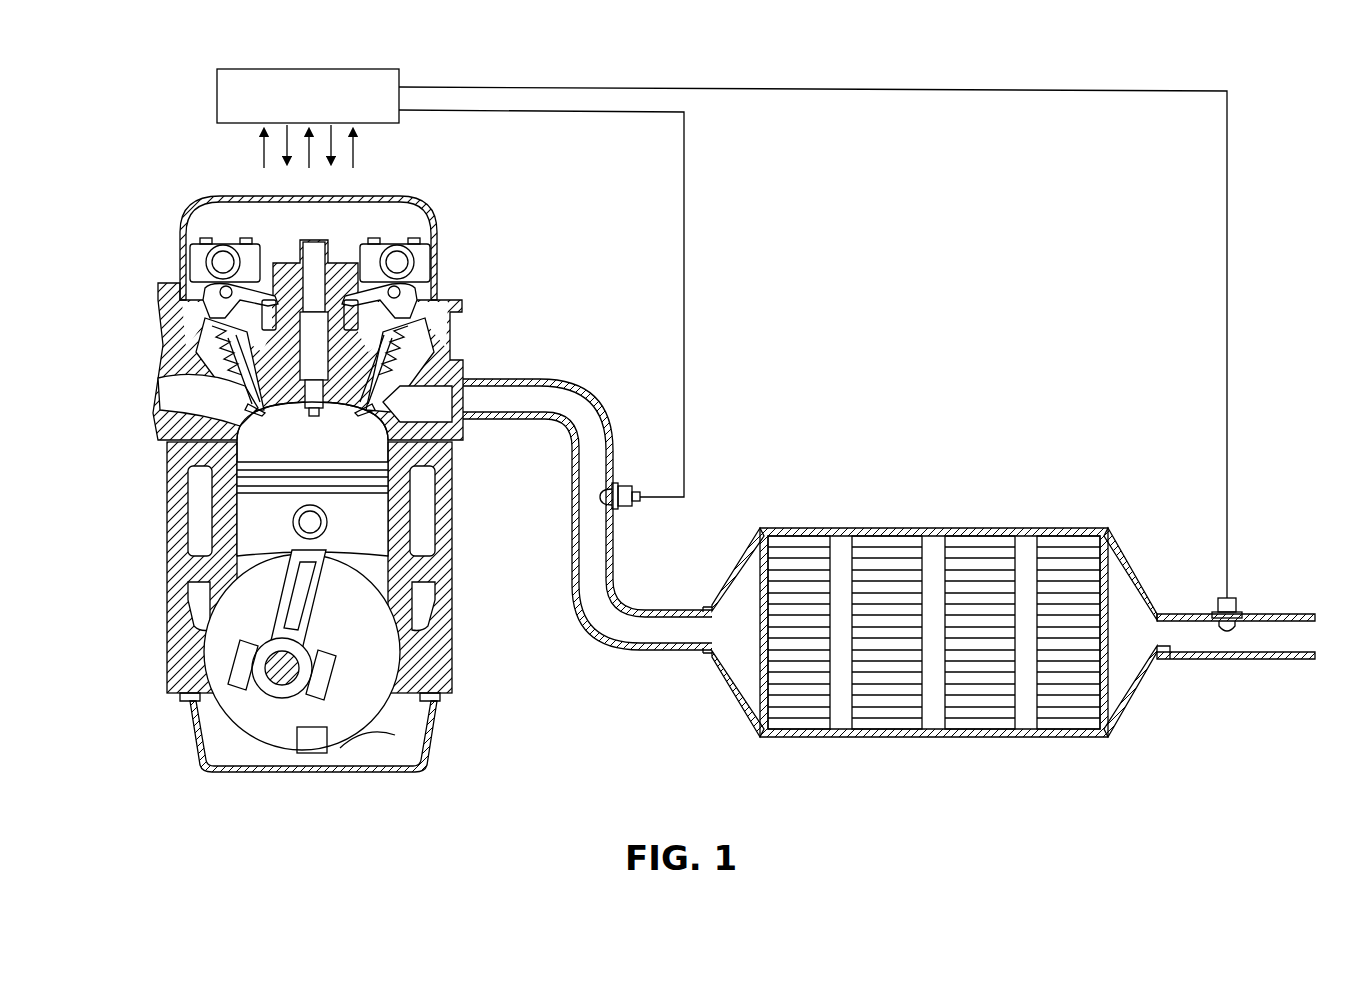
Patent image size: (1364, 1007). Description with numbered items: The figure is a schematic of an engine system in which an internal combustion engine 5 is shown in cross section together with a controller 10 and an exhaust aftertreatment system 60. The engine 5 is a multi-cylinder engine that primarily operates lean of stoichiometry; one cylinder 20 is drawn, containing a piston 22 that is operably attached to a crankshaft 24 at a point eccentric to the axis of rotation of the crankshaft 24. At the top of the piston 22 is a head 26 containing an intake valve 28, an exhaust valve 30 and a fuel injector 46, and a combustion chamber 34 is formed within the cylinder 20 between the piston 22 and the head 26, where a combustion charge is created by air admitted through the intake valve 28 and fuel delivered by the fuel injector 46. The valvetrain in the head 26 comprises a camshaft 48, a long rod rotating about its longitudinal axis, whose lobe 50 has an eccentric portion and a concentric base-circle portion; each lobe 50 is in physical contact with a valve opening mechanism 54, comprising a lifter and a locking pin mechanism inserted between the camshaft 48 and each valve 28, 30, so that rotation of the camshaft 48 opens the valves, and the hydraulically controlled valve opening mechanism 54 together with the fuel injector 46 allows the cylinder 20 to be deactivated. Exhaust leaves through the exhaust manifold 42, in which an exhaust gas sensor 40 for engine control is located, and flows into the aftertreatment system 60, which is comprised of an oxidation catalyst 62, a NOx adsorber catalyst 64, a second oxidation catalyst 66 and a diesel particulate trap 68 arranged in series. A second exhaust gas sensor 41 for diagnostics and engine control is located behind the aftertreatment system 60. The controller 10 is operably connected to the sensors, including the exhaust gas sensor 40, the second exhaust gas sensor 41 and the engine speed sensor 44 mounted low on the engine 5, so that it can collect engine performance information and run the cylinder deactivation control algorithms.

The internal combustion engine 5 is at (428, 735).
The controller 10 is at (396, 70).
The cylinder 20 is at (250, 440).
The piston 22 is at (276, 532).
The crankshaft 24 is at (365, 652).
The head 26 is at (286, 262).
The intake valve 28 is at (246, 385).
The exhaust valve 30 is at (445, 368).
The combustion chamber 34 is at (307, 445).
The exhaust gas sensor 40 is at (626, 508).
The second exhaust gas sensor 41 is at (1242, 605).
The exhaust manifold 42 is at (528, 379).
The engine speed sensor 44 is at (304, 746).
The fuel injector 46 is at (313, 258).
The camshaft 48 is at (400, 258).
The lobe 50 is at (417, 272).
The valve opening mechanism 54 is at (404, 310).
The exhaust aftertreatment system 60 is at (998, 653).
The oxidation catalyst 62 is at (800, 546).
The NOx adsorber catalyst 64 is at (890, 548).
The second oxidation catalyst 66 is at (982, 548).
The diesel particulate trap 68 is at (1072, 548).